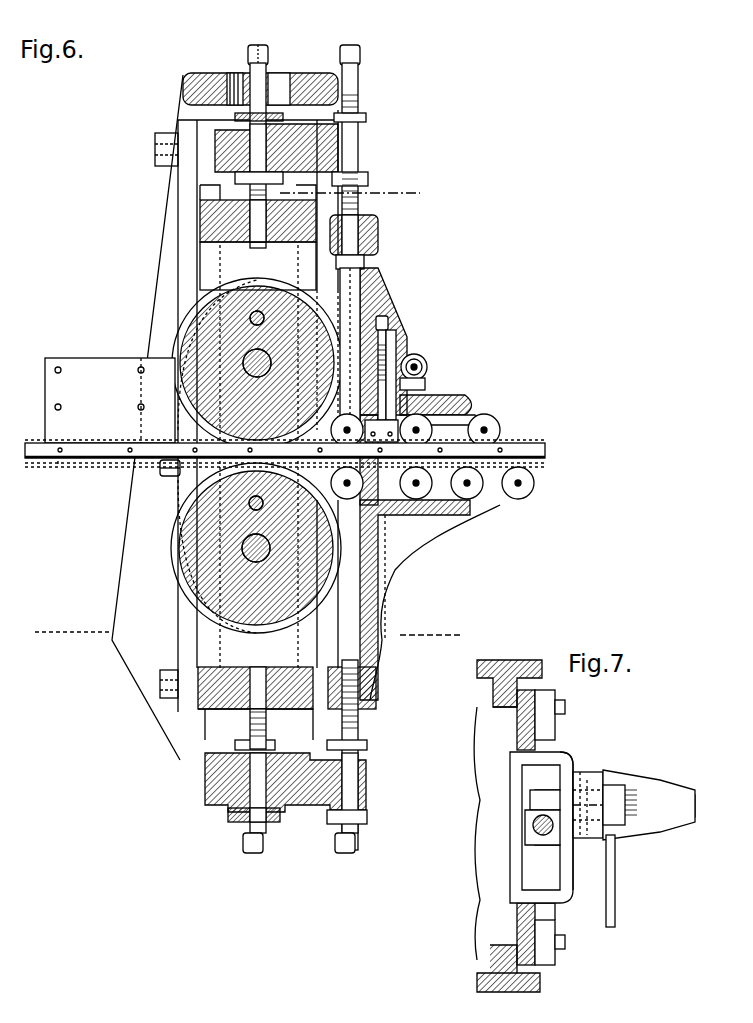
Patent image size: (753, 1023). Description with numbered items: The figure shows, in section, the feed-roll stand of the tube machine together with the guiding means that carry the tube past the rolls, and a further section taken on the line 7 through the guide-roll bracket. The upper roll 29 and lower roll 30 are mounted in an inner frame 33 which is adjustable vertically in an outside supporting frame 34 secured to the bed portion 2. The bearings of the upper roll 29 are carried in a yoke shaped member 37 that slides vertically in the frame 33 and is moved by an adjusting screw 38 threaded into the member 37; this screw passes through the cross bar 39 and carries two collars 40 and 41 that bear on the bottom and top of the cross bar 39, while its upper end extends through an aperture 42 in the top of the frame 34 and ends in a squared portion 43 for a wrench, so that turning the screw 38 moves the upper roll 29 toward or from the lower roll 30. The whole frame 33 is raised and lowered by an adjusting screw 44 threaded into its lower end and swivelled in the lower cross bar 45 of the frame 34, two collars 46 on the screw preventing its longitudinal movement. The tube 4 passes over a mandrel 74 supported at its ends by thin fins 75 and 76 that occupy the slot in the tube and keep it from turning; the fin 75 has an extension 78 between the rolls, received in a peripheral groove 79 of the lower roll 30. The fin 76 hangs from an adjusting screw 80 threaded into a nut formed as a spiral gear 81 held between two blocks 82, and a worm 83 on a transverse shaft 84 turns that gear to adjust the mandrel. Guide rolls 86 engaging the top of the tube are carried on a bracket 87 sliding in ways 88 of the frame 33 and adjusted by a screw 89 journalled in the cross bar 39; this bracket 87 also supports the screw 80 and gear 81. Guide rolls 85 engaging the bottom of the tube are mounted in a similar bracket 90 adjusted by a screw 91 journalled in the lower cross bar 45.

In FIG. 6, the bed portion 2 is at (60, 630).
In FIG. 6, the tube 4 is at (64, 463).
In FIG. 6, the section line 7— 7 is at (353, 193).
In FIG. 6, the upper roll 29 is at (182, 322).
In FIG. 6, the lower roll 30 is at (178, 537).
In FIG. 6, the frame 33 is at (210, 712).
In FIG. 7, the frame 33 is at (520, 925).
In FIG. 6, the supporting frame 34 is at (167, 244).
In FIG. 7, the supporting frame 34 is at (497, 988).
In FIG. 6, the yoke shaped member 37 is at (228, 212).
In FIG. 6, the adjusting screw 38 is at (215, 193).
In FIG. 6, the cross bar 39 is at (300, 140).
In FIG. 6, the collar 40 is at (240, 178).
In FIG. 6, the collar 41 is at (240, 116).
In FIG. 6, the aperture 42 is at (283, 82).
In FIG. 6, the squared portion 43 is at (255, 50).
In FIG. 6, the adjusting screw 44 is at (245, 742).
In FIG. 6, the lower cross bar 45 is at (300, 805).
In FIG. 6, the collars 46 is at (230, 818).
In FIG. 6, the mandrel 74 is at (505, 453).
In FIG. 6, the supporting fin 75 is at (66, 360).
In FIG. 6, the supporting fin 76 is at (427, 484).
In FIG. 6, the extension 78 is at (318, 440).
In FIG. 6, the peripheral groove 79 is at (303, 300).
In FIG. 6, the adjusting screw 80 is at (470, 416).
In FIG. 7, the adjusting screw 80 is at (631, 823).
In FIG. 6, the spiral gear 81 is at (395, 345).
In FIG. 7, the spiral gear 81 is at (590, 785).
In FIG. 6, the blocks 82 is at (400, 342).
In FIG. 7, the blocks 82 is at (612, 798).
In FIG. 6, the worm 83 is at (425, 362).
In FIG. 7, the worm 83 is at (636, 795).
In FIG. 6, the transverse shaft 84 is at (424, 358).
In FIG. 7, the transverse shaft 84 is at (616, 896).
In FIG. 6, the rolls 85 is at (518, 492).
In FIG. 6, the rolls 86 is at (470, 431).
In FIG. 7, the rolls 86 is at (525, 805).
In FIG. 6, the bracket 87 is at (445, 400).
In FIG. 7, the bracket 87 is at (566, 758).
In FIG. 7, the ways 88 is at (555, 935).
In FIG. 6, the adjusting screw 89 is at (362, 218).
In FIG. 7, the adjusting screw 89 is at (543, 836).
In FIG. 6, the bracket 90 is at (378, 582).
In FIG. 6, the adjusting screw 91 is at (360, 722).